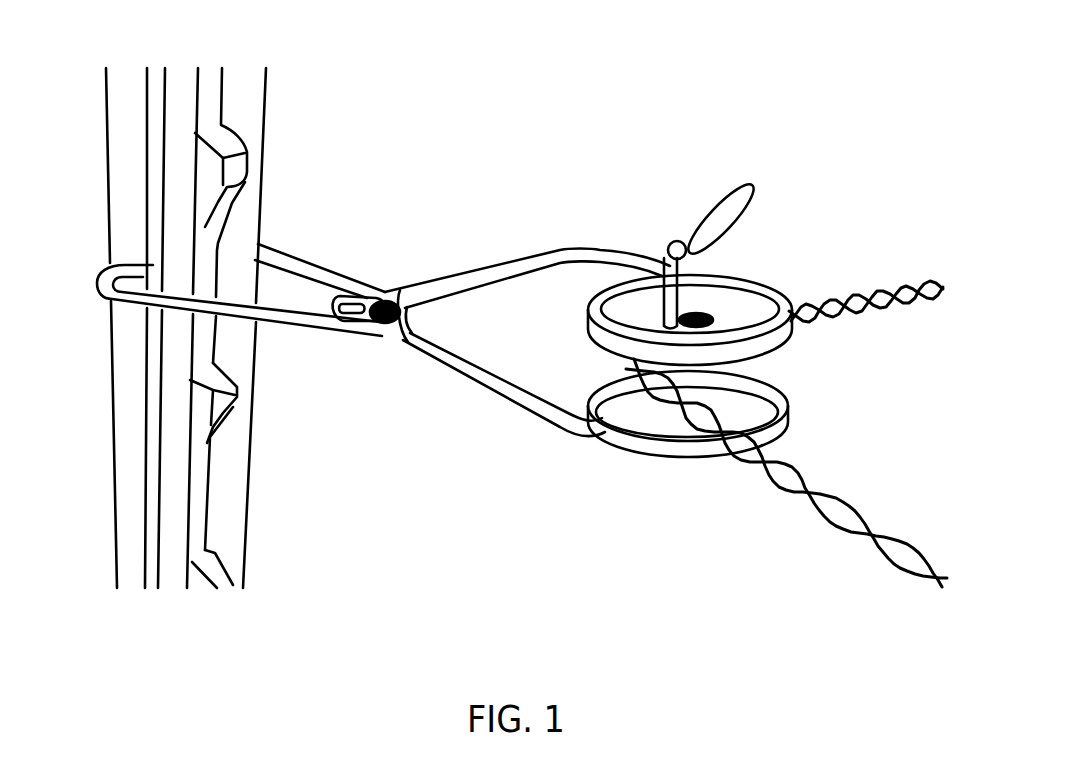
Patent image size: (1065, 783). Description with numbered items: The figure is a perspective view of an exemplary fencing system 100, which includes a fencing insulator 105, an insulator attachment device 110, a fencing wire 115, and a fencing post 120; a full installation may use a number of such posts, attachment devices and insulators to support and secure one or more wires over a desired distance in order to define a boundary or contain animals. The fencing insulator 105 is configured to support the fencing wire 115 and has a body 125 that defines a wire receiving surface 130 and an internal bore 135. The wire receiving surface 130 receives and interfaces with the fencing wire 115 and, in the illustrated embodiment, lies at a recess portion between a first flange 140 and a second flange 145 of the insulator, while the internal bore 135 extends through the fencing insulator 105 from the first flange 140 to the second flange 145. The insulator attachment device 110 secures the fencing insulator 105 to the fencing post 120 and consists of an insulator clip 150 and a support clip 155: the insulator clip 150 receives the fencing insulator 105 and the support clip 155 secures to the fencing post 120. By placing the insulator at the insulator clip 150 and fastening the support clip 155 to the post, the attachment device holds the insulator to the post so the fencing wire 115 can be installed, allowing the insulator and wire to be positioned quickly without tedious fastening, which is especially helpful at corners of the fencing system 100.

The fencing system 100 is at (522, 84).
The fencing insulator 105 is at (783, 356).
The insulator attachment device 110 is at (402, 411).
The fencing wire 115 is at (795, 494).
The fencing post 120 is at (113, 117).
The body 125 is at (627, 412).
The wire receiving surface 130 is at (714, 378).
The internal bore 135 is at (700, 318).
The first flange 140 is at (662, 453).
The second flange 145 is at (772, 292).
The insulator clip 150 is at (526, 244).
The support clip 155 is at (326, 254).